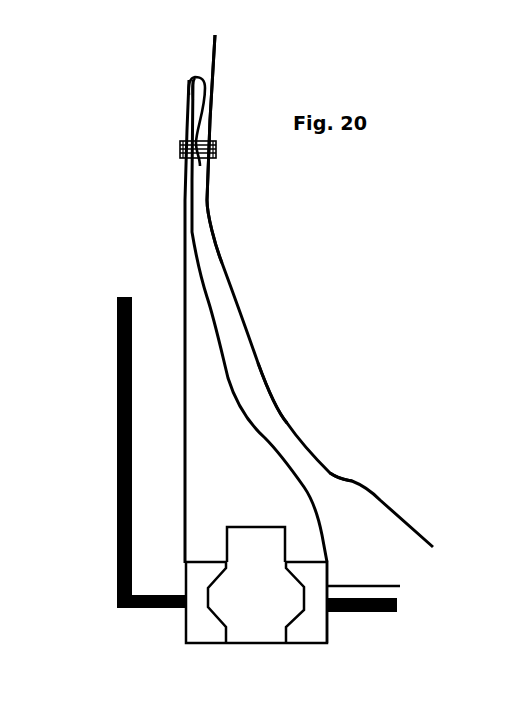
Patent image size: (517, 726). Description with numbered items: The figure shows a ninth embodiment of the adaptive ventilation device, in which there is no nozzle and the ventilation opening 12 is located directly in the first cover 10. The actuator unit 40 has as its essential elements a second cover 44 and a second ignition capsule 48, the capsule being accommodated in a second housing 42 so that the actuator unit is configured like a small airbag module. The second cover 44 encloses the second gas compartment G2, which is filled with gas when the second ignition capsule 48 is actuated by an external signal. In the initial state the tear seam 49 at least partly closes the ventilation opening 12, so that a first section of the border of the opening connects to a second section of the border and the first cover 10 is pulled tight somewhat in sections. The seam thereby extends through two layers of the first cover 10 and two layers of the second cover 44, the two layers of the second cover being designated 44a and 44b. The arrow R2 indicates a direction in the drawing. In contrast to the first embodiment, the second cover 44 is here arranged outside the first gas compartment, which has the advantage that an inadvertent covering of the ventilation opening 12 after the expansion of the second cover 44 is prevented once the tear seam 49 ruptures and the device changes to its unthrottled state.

The ventilation opening 12 is at (165, 109).
The tear seam 49 is at (212, 137).
The first cover 10 is at (217, 233).
The second layer of the second cover 44b is at (268, 382).
The first layer of the second cover 44a is at (242, 405).
The second cover 44 is at (265, 433).
The second gas compartment G2 is at (323, 488).
The direction R2 is at (352, 255).
The second ignition capsule 48 is at (278, 540).
The actuator unit 40 is at (200, 622).
The second housing 42 is at (315, 628).